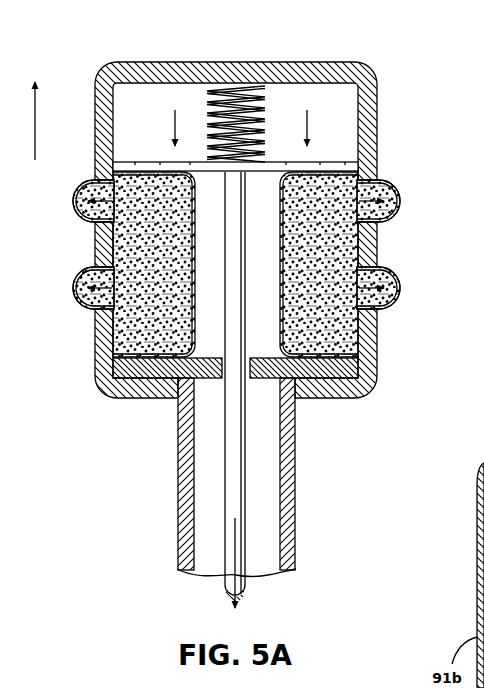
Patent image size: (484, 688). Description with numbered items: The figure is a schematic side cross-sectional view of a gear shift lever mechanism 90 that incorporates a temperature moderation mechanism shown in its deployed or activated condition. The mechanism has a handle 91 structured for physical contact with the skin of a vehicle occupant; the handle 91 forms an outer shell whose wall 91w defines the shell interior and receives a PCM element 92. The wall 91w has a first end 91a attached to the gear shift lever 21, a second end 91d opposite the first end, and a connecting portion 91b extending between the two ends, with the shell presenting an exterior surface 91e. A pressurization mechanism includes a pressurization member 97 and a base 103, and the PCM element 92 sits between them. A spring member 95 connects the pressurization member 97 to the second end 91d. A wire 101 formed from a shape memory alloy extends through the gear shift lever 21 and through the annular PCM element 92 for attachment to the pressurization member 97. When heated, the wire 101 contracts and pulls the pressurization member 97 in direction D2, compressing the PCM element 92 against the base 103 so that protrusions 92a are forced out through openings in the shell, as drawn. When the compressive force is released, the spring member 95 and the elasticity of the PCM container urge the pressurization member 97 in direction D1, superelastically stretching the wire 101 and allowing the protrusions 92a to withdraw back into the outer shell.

The gear shift lever mechanism 90 is at (51, 41).
The handle 91 is at (129, 60).
The first end 91a is at (142, 395).
The connecting portion 91b is at (95, 108).
The second end 91d is at (175, 74).
The exterior surface 91e is at (381, 352).
The wall 91w is at (378, 137).
The PCM element 92 is at (106, 333).
The protrusions 92a is at (75, 201).
The spring member 95 is at (214, 95).
The pressurization member 97 is at (118, 160).
The wire 101 is at (246, 497).
The base 103 is at (110, 392).
The gear shift lever 21 is at (178, 505).
The direction D1 is at (32, 132).
The direction D2 is at (306, 122).